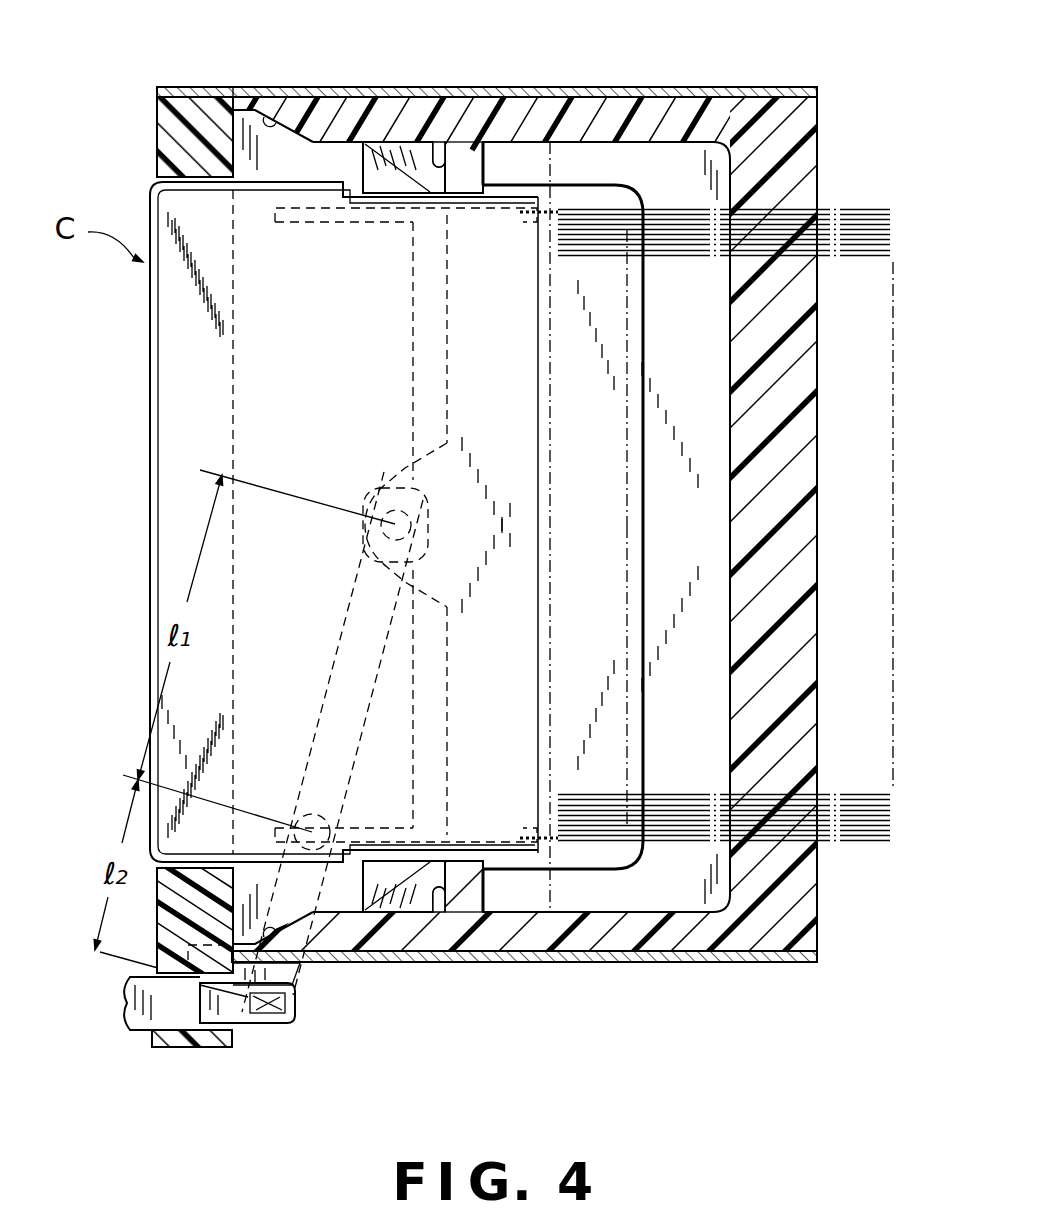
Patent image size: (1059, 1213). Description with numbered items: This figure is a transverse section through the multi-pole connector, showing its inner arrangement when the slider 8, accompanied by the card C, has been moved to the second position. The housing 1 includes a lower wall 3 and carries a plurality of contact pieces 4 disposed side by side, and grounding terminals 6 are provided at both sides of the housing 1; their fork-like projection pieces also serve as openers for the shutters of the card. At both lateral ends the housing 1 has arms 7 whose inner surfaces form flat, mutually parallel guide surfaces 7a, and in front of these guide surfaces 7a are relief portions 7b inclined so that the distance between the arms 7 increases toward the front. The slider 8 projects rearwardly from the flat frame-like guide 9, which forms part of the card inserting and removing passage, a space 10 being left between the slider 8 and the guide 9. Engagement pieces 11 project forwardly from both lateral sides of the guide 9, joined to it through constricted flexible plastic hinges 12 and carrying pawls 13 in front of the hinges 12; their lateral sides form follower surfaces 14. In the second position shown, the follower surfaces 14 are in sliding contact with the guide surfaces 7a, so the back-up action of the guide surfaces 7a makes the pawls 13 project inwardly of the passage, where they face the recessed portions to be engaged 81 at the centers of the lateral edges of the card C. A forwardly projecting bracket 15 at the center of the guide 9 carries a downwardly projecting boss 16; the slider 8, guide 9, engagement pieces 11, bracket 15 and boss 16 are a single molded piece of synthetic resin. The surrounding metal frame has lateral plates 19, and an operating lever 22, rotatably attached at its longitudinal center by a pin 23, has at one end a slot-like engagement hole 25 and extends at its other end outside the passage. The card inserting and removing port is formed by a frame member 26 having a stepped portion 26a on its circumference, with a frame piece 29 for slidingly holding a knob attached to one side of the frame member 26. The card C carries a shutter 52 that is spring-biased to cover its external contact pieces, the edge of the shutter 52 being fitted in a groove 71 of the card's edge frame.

The housing 1 is at (817, 123).
The lower wall 3 is at (548, 388).
The contact pieces 4 is at (677, 263).
The grounding terminals 6 is at (675, 213).
The arms 7 is at (517, 97).
The guide surfaces 7a is at (587, 142).
The relief portions 7b is at (270, 115).
The slider 8 is at (716, 497).
The guide 9 is at (485, 165).
The space 10 is at (610, 185).
The engagement pieces 11 is at (372, 142).
The plastic hinges 12 is at (433, 203).
The pawls 13 is at (417, 193).
The follower surfaces 14 is at (437, 142).
The bracket 15 is at (403, 472).
The boss 16 is at (373, 557).
The lateral plates 19 is at (713, 97).
The operating lever 22 is at (322, 703).
The pin 23 is at (300, 795).
The engagement hole 25 is at (380, 497).
The frame member 26 is at (155, 150).
The stepped portion 26a is at (200, 88).
The frame piece 29 is at (187, 1048).
The shutter 52 is at (540, 442).
The groove 71 is at (533, 222).
The recessed portion to be engaged 81 is at (360, 178).